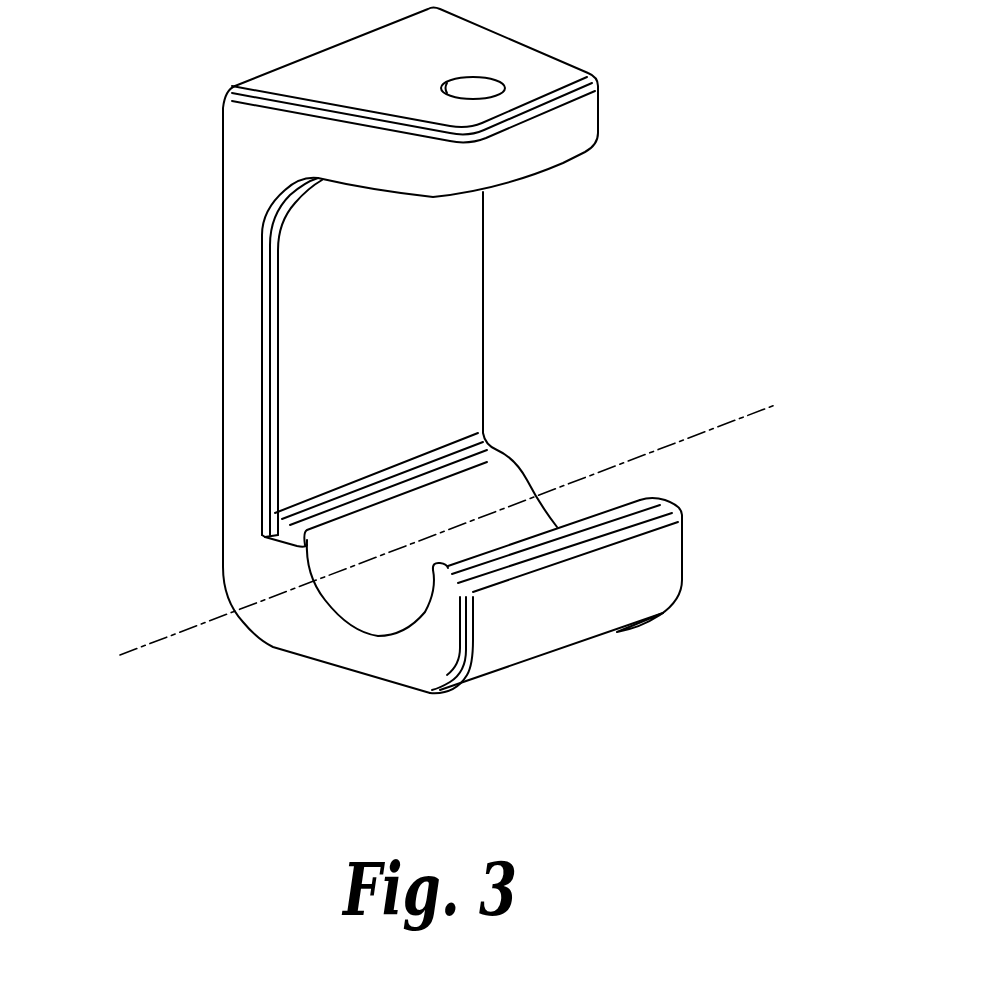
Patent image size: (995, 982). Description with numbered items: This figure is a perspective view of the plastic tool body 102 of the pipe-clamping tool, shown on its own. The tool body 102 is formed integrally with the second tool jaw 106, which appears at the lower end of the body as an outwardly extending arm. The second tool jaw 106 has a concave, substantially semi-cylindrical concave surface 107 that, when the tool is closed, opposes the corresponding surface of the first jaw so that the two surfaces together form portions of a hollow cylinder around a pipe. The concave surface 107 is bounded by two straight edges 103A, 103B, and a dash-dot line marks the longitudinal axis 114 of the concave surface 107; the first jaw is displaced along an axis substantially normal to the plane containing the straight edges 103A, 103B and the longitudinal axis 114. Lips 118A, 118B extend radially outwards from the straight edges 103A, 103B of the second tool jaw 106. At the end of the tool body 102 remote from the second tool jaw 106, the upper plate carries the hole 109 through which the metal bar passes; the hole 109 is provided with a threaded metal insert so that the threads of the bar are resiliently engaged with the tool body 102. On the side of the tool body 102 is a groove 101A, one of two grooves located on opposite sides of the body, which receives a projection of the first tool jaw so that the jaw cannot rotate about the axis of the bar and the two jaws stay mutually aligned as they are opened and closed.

The tool body 102 is at (438, 385).
The groove 101A is at (245, 300).
The hole 109 is at (490, 90).
The straight edge 103A is at (492, 458).
The straight edge 103B is at (433, 566).
The concave surface 107 is at (502, 500).
The longitudinal axis 114 is at (705, 432).
The lip 118A is at (637, 508).
The lip 118B is at (265, 537).
The second tool jaw 106 is at (445, 652).